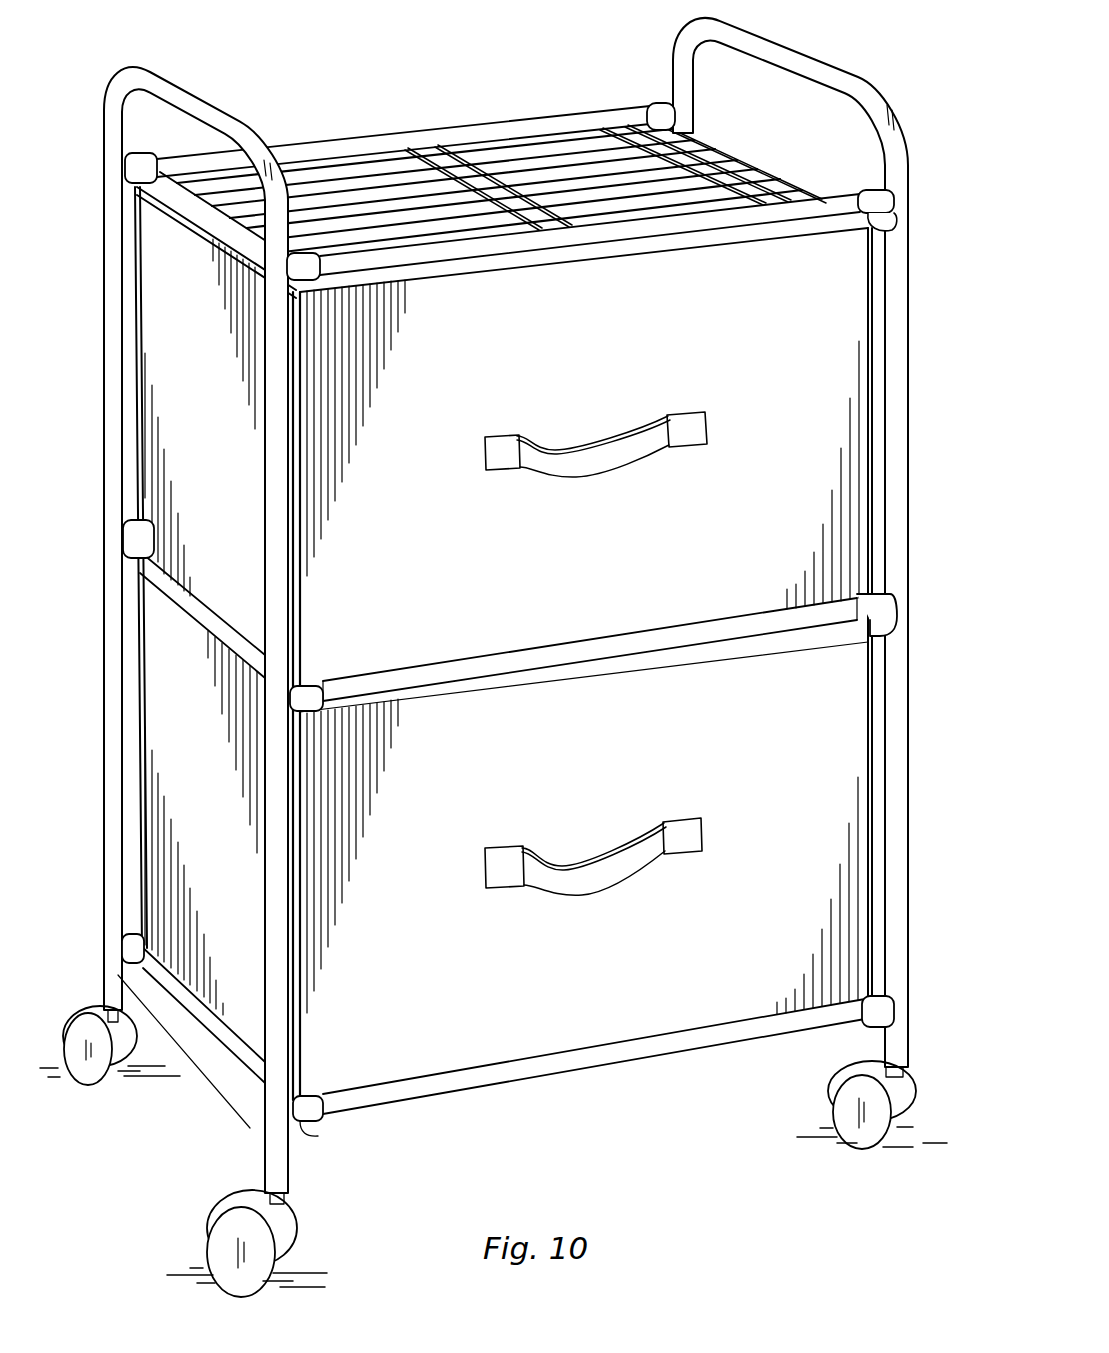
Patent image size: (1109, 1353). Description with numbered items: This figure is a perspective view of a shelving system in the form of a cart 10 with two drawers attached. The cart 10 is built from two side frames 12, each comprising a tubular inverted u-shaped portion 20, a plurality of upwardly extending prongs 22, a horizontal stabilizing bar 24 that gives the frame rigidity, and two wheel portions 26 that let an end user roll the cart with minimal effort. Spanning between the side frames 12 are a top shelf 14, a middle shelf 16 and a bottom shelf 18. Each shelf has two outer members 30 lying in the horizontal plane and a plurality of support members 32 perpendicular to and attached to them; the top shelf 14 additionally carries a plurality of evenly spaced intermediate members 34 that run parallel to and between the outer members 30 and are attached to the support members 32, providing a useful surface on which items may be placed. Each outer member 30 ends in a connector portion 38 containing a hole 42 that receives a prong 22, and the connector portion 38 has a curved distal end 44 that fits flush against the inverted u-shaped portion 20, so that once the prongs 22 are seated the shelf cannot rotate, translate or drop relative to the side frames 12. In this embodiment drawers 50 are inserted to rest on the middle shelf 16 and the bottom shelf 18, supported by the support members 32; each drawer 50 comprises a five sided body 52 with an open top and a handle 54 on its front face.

The cart 10 is at (908, 94).
The side frame 12 is at (101, 221).
The top shelf 14 is at (338, 141).
The middle shelf 16 is at (400, 677).
The bottom shelf 18 is at (392, 1094).
The inverted u-shaped portion 20 is at (233, 114).
The prong 22 is at (128, 534).
The horizontal stabilizing bar 24 is at (196, 1070).
The wheel portion 26 is at (97, 1088).
The outer member 30 is at (526, 240).
The support member 32 is at (549, 208).
The intermediate member 34 is at (428, 179).
The connector portion 38 is at (134, 151).
The hole 42 is at (873, 191).
The curved distal end 44 is at (904, 208).
The drawer 50 is at (782, 552).
The five sided body 52 is at (825, 386).
The handle 54 is at (503, 434).